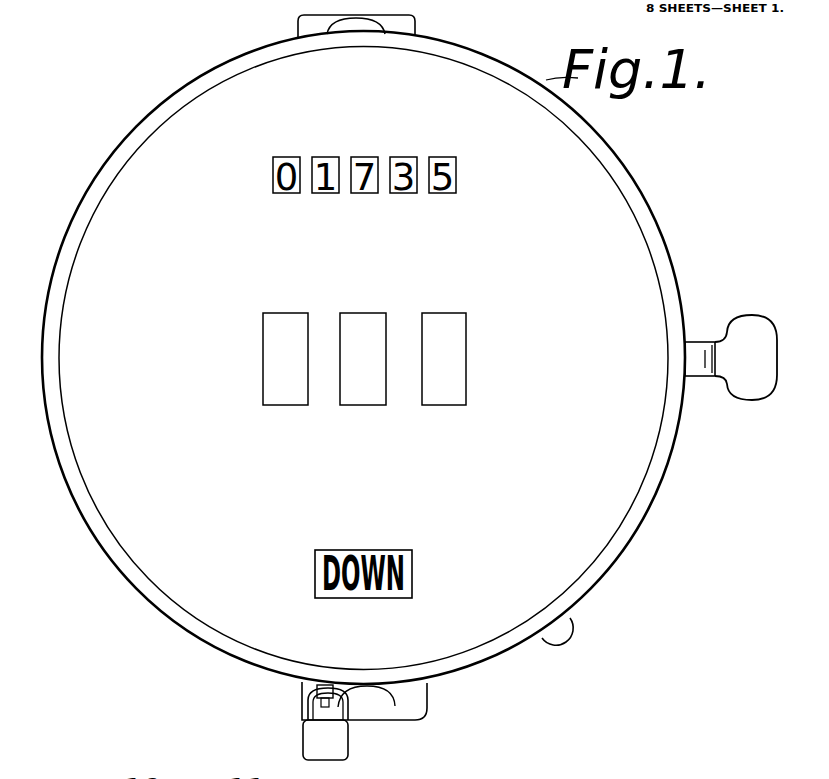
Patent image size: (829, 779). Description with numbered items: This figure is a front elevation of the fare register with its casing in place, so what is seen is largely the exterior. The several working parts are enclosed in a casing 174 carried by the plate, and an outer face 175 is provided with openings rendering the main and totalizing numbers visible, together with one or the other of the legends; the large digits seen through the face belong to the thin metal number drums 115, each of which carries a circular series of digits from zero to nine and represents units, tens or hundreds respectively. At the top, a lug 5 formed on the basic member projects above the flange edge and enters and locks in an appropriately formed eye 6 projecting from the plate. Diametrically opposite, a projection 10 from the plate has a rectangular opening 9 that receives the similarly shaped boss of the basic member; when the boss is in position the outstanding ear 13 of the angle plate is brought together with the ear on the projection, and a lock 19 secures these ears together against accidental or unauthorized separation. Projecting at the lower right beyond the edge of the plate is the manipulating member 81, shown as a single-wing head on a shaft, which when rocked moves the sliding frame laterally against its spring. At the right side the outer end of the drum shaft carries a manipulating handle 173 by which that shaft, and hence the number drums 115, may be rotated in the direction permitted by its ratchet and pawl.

The lug 5 is at (353, 23).
The eye 6 is at (407, 24).
The opening 9 is at (377, 695).
The projection 10 is at (407, 722).
The outstanding ear 13 is at (317, 694).
The lock 19 is at (333, 745).
The manipulating member 81 is at (572, 628).
The number drum 115 is at (457, 387).
The manipulating handle 173 is at (752, 335).
The casing 174 is at (600, 583).
The outer face 175 is at (422, 523).